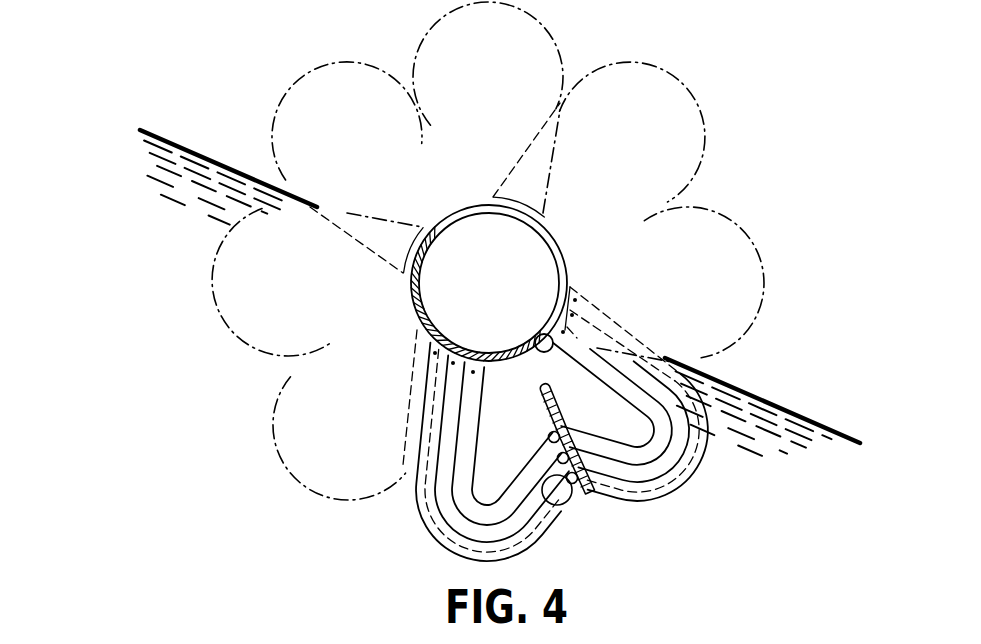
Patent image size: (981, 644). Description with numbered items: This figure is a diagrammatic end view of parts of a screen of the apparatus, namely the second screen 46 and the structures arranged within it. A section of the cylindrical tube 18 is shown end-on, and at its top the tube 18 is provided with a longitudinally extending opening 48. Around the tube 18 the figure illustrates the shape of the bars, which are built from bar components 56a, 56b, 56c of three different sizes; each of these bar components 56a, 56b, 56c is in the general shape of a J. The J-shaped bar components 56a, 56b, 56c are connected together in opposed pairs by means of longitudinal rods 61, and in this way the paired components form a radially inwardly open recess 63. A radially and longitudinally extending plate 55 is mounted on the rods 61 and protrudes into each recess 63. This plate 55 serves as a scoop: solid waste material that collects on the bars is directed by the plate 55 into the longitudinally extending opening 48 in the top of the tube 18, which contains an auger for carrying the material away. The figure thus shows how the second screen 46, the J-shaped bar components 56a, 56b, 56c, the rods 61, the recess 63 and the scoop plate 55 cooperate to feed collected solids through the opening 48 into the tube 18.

The second screen 46 is at (748, 168).
The opening 48 is at (567, 256).
The tube 18 is at (463, 340).
The recess 63 is at (540, 336).
The plate 55 is at (540, 392).
The longitudinal rods 61 is at (558, 455).
The bar component 56a is at (638, 497).
The bar component 56b is at (657, 470).
The bar component 56c is at (657, 440).